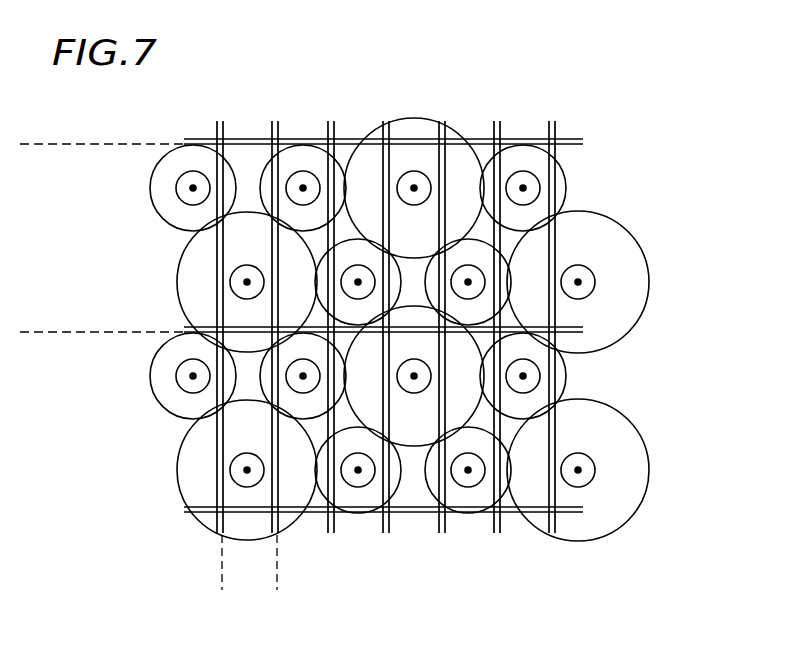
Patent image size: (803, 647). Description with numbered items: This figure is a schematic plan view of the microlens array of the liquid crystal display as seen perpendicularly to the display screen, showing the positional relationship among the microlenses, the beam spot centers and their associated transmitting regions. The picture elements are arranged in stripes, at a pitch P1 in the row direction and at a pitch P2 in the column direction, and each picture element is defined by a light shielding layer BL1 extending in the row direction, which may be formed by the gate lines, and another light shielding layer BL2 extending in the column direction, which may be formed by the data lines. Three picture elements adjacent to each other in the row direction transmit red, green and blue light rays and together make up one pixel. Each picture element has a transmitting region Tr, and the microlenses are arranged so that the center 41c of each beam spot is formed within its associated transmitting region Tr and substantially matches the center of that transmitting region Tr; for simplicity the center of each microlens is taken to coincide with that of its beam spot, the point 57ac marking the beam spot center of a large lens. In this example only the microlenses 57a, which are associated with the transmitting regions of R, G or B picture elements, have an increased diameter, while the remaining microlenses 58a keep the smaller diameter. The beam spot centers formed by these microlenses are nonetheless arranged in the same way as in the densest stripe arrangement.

The light shielding layer BL2 is at (557, 128).
The light shielding layer BL1 is at (583, 141).
The microlens 58a is at (564, 190).
The transmitting region Tr is at (590, 282).
The microlens 57a is at (625, 313).
The storage node contact 57ac is at (178, 280).
The center of a beam spot 41c is at (247, 282).
The pitch P1 is at (276, 577).
The pitch P2 is at (44, 330).